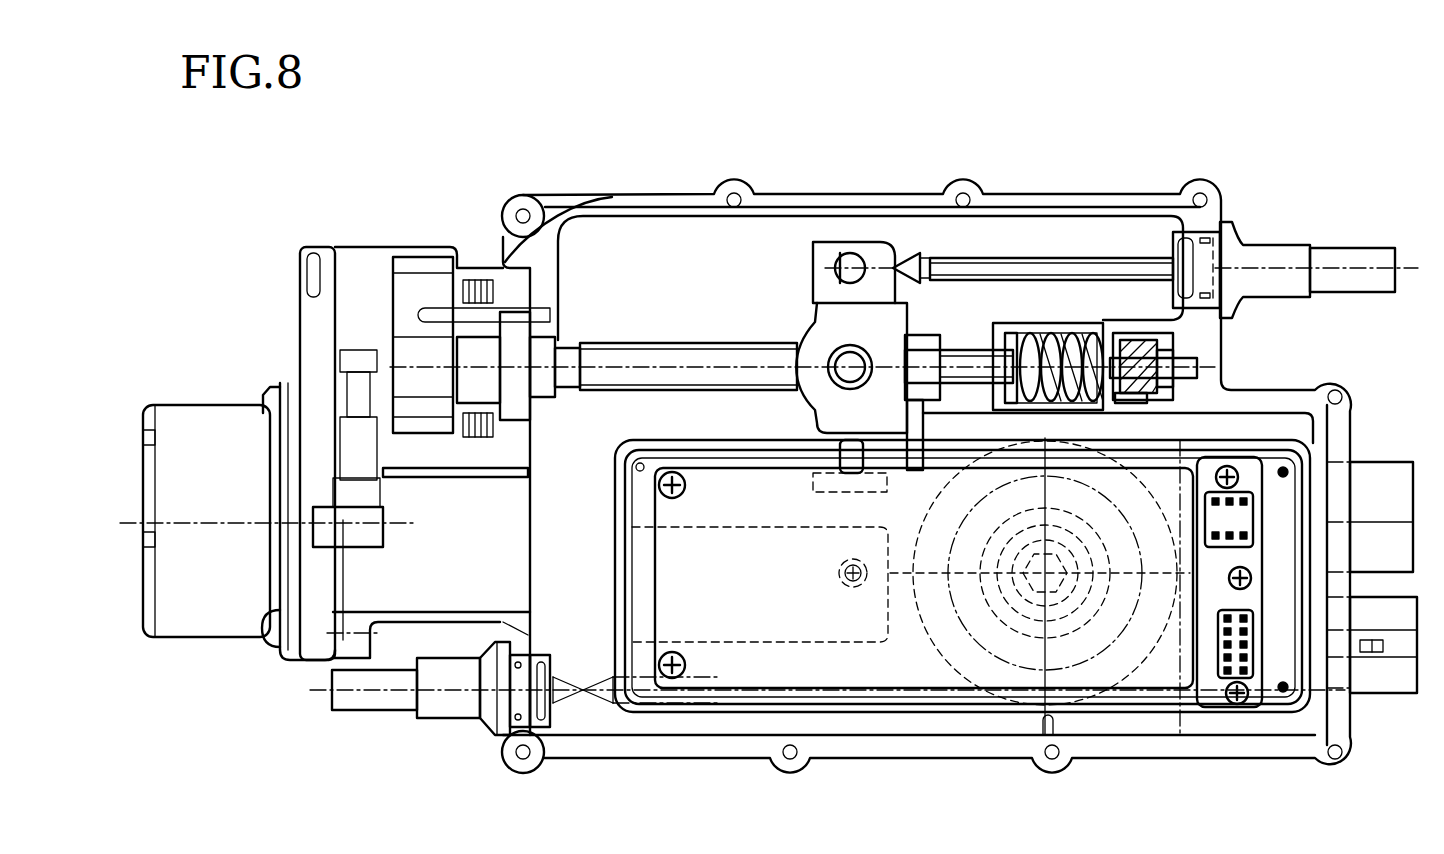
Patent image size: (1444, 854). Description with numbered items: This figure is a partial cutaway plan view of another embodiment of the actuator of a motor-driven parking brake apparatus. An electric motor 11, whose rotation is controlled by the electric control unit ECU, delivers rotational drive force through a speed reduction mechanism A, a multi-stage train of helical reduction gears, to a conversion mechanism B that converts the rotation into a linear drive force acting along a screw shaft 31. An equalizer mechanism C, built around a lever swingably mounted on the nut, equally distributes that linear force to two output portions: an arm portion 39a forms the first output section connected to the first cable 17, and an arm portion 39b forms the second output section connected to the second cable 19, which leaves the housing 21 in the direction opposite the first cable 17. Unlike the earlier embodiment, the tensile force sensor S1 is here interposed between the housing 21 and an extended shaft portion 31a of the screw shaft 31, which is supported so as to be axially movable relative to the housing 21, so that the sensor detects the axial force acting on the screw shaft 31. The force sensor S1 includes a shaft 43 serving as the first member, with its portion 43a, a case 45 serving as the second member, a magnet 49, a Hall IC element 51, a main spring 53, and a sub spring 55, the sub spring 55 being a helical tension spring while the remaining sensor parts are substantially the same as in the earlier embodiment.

The electric motor 11 is at (213, 627).
The first cable 17 is at (1327, 247).
The second cable 19 is at (384, 702).
The housing 21 is at (1210, 327).
The screw shaft 31 is at (633, 345).
The extended shaft portion 31a is at (960, 355).
The arm portion 39a is at (823, 263).
The arm portion 39b is at (815, 433).
The shaft 43 is at (1105, 343).
The spring holder end wall 43a is at (1010, 407).
The case 45 is at (1112, 405).
The magnet 49 is at (1137, 343).
The Hall IC element 51 is at (1150, 408).
The main spring 53 is at (1037, 335).
The sub spring 55 is at (1197, 345).
The speed reduction mechanism A is at (413, 473).
The conversion mechanism B is at (797, 342).
The equalizer mechanism C is at (838, 253).
The tensile force sensor S1 is at (1055, 327).
The electric control unit ECU is at (1160, 668).